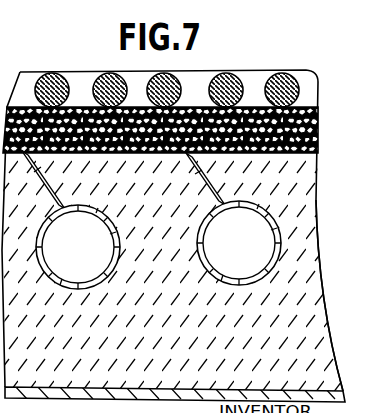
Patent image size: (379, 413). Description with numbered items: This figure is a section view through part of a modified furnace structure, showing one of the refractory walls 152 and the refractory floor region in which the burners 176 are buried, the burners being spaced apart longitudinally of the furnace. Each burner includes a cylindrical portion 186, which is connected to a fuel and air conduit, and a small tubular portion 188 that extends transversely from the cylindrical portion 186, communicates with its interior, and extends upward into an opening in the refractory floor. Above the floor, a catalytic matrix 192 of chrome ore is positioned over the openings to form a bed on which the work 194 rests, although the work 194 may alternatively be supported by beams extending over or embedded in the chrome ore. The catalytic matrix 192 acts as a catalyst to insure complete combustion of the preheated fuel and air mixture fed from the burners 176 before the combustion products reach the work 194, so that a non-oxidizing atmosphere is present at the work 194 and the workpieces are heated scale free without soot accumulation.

The refractory front wall 152 is at (40, 381).
The burners 176 is at (282, 243).
The cylindrical portions 186 is at (41, 243).
The small tubular portions 188 is at (219, 210).
The catalytic matrix 192 is at (25, 107).
The work 194 is at (238, 78).